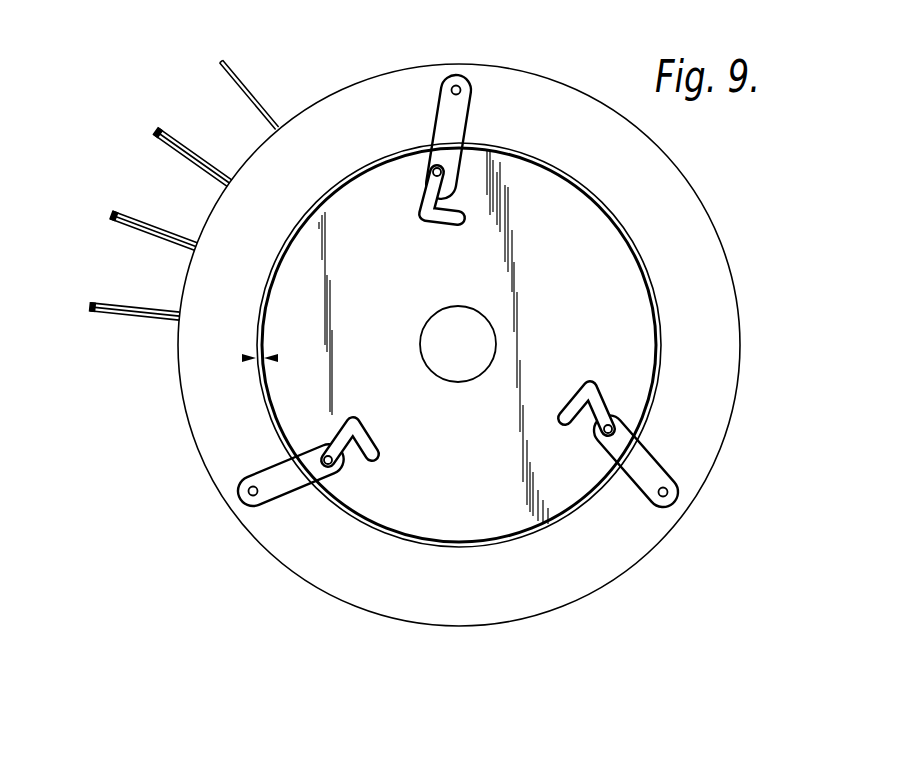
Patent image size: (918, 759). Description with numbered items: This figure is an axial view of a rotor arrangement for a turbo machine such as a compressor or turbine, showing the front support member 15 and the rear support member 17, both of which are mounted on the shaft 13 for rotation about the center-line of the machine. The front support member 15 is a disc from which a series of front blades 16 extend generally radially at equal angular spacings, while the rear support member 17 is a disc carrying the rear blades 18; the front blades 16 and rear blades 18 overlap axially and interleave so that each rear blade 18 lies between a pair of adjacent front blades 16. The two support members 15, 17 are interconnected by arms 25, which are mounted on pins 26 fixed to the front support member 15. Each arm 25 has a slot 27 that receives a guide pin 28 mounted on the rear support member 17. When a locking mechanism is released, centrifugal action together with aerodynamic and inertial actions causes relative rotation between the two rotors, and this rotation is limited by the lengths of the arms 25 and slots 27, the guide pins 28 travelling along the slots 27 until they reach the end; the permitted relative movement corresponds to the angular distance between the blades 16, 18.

The shaft 13 is at (421, 337).
The front support member 15 is at (692, 305).
The front blades 16 is at (163, 131).
The rear support member 17 is at (612, 276).
The rear blades 18 is at (238, 74).
The arms 25 is at (447, 123).
The pins 26 is at (459, 76).
The slots 27 is at (424, 205).
The guide pins 28 is at (432, 173).